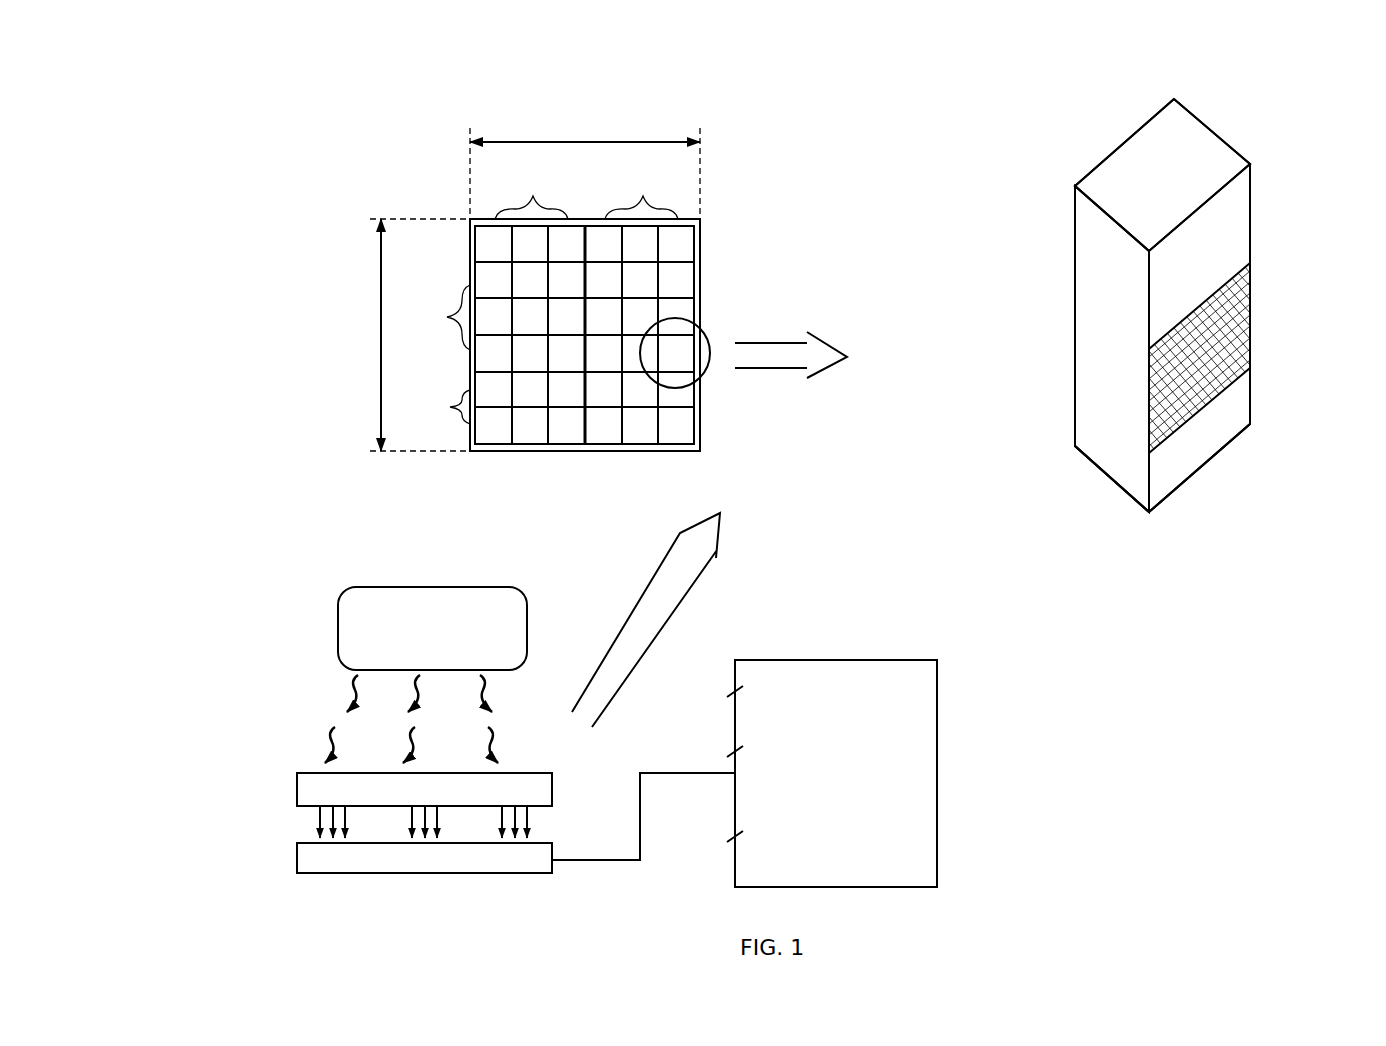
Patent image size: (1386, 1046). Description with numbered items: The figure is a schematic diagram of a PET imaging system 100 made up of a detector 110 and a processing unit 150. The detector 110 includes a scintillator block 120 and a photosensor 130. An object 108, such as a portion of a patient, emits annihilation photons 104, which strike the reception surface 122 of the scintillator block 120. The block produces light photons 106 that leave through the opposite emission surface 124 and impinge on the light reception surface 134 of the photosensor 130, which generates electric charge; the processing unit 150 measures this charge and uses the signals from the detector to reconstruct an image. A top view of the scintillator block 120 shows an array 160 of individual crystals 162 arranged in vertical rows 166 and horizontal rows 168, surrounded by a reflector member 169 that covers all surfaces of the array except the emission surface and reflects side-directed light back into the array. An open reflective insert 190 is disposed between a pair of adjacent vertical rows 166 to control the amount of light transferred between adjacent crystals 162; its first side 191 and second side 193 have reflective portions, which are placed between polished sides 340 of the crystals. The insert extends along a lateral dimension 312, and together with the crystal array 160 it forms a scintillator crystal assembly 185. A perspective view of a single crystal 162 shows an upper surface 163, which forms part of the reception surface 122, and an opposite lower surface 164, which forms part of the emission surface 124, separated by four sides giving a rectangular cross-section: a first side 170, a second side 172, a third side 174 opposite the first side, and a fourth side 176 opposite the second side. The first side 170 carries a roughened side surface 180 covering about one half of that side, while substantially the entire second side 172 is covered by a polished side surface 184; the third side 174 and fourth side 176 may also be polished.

The imaging system 100 is at (476, 86).
The array 160 is at (452, 186).
The lateral dimension 312 is at (584, 136).
The vertical rows 166 is at (586, 191).
The horizontal rows 168 is at (433, 354).
The crystal 162 is at (682, 243).
The polished sides 340 is at (574, 311).
The second side 193 is at (600, 314).
The first side 191 is at (574, 349).
The scintillator crystal assembly 185 is at (714, 381).
The open reflective insert 190 is at (588, 386).
The reflector member 169 is at (645, 452).
The upper surface 163 is at (1200, 136).
The fourth side 176 is at (1260, 216).
The third side 174 is at (1062, 240).
The polished side surface 184 is at (1087, 328).
The roughened side surface 180 is at (1255, 318).
The second side 172 is at (1103, 453).
The first side 170 is at (1226, 425).
The lower surface 164 is at (1116, 516).
The detector 110 is at (206, 822).
The object 108 is at (437, 587).
The annihilation photons 104 is at (490, 688).
The scintillator block 120 is at (290, 786).
The reception surface 122 is at (530, 773).
The emission surface 124 is at (307, 806).
The light photons 106 is at (530, 816).
The photosensor 130 is at (290, 860).
The light reception surface 134 is at (552, 843).
The processing unit 150 is at (833, 660).